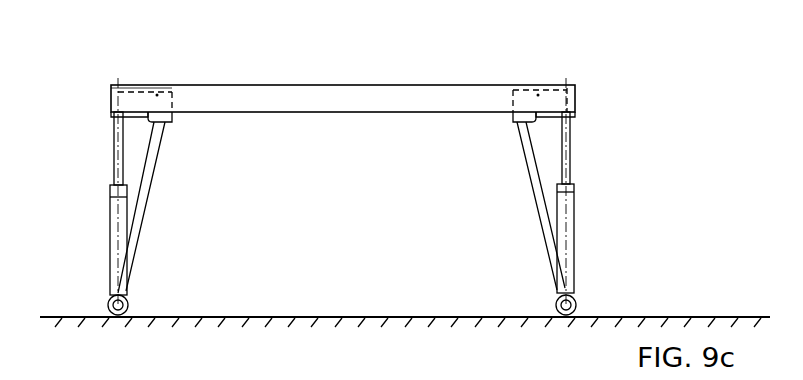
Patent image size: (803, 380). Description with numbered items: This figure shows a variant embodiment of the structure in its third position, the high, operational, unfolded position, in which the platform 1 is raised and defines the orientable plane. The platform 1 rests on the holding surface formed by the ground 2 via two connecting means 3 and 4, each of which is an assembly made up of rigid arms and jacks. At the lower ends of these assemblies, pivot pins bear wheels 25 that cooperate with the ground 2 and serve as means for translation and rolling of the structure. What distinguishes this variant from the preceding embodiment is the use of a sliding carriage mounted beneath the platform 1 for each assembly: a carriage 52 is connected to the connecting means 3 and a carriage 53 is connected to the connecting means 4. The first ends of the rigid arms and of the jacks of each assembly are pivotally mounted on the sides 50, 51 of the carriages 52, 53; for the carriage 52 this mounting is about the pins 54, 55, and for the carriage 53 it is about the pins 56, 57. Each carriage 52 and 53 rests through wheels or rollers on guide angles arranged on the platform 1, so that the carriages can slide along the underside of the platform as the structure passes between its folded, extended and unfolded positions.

The platform 1 is at (436, 85).
The ground 2 is at (383, 316).
The connecting means 3 is at (98, 180).
The connecting means 4 is at (583, 174).
The wheels 25 is at (107, 302).
The side of carriage 50 is at (125, 133).
The side of carriage 51 is at (540, 114).
The carriage 52 is at (157, 92).
The carriage 53 is at (538, 93).
The pin 54 is at (172, 118).
The pin 55 is at (118, 102).
The pin 56 is at (515, 120).
The pin 57 is at (565, 100).